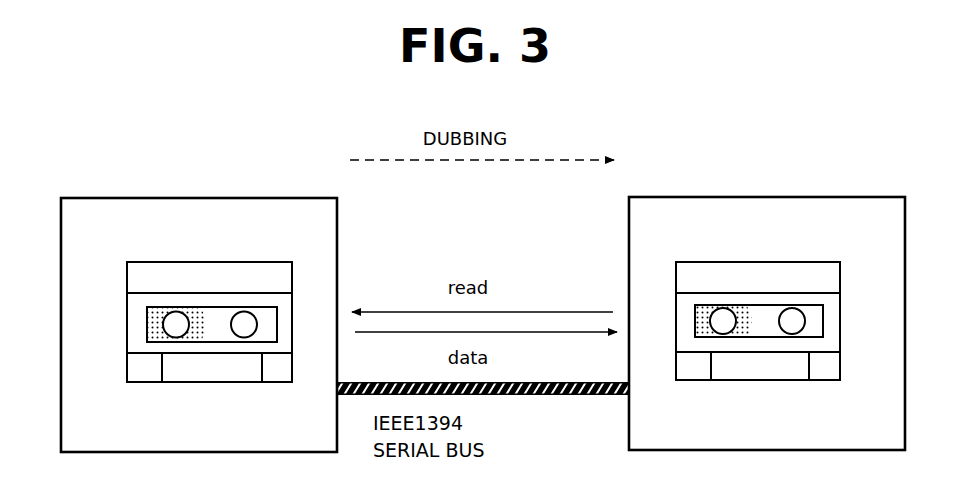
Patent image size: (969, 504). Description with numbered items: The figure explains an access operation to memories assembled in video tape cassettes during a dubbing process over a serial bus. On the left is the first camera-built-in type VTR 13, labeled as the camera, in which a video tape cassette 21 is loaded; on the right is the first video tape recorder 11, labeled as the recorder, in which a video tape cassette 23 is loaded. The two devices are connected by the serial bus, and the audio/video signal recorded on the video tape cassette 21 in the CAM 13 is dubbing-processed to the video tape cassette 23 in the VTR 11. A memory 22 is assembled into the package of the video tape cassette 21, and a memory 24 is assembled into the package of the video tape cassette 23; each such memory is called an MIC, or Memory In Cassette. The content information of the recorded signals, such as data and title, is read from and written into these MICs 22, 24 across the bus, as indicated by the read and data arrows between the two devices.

The first video tape recorder 11 is at (752, 197).
The first camera-built-in type VTR 13 is at (183, 198).
The video tape cassette 21 is at (127, 317).
The memory 22 is at (217, 382).
The video tape cassette 23 is at (842, 317).
The memory 24 is at (767, 380).